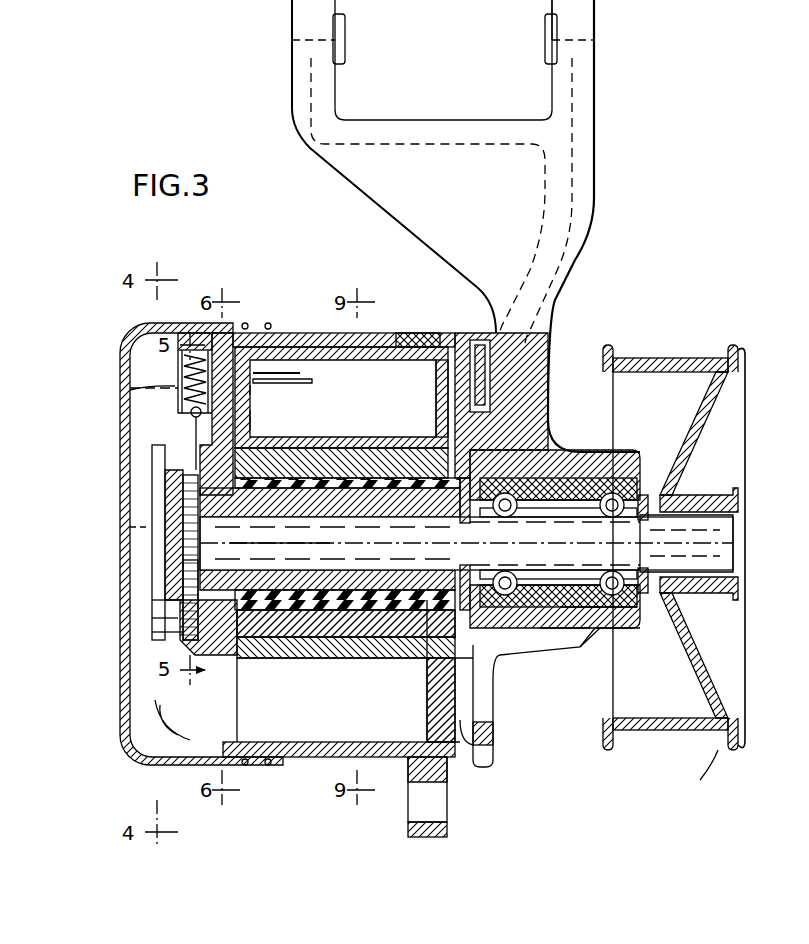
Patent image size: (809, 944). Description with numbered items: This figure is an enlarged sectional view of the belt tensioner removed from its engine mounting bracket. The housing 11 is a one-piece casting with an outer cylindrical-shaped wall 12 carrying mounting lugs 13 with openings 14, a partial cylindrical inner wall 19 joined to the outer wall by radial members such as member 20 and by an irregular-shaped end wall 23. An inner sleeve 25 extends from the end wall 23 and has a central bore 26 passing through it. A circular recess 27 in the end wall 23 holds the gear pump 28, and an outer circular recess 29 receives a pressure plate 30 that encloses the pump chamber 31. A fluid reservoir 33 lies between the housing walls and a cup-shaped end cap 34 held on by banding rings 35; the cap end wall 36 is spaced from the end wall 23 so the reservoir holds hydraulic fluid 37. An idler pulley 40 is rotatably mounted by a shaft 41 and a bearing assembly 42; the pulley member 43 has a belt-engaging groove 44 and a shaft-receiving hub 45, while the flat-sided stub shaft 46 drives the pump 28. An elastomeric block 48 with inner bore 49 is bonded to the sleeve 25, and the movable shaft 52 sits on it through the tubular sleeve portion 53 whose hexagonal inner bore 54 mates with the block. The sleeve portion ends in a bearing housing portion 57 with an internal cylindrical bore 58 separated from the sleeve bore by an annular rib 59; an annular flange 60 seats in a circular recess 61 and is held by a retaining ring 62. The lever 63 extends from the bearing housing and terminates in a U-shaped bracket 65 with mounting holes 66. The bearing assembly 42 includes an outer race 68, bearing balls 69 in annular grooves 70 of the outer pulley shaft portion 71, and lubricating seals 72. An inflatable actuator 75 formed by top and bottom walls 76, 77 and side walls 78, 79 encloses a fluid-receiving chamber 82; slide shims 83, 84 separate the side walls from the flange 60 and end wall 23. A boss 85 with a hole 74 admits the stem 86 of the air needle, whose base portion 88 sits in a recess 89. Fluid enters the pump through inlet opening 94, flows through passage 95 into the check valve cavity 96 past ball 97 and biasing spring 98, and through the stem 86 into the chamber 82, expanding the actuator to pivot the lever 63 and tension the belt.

The housing 11 is at (300, 762).
The outer cylindrical-shaped wall 12 is at (383, 333).
The mounting lugs 13 is at (428, 836).
The openings 14 is at (432, 812).
The inner wall 19 is at (293, 660).
The radially extending member 20 is at (336, 716).
The end wall 23 is at (212, 436).
The inner cylindrical-shaped sleeve 25 is at (380, 640).
The central bore 26 is at (192, 595).
The circular recess 27 is at (162, 606).
The gear pump 28 is at (170, 547).
The outer circular recess 29 is at (175, 632).
The pressure plate 30 is at (152, 506).
The pump chamber 31 is at (183, 490).
The fluid reservoir 33 is at (150, 720).
The end cap 34 is at (118, 684).
The banding rings 35 is at (268, 322).
The cap end wall 36 is at (120, 456).
The hydraulic fluid 37 is at (130, 528).
The idler pulley 40 is at (692, 356).
The shaft 41 is at (372, 530).
The bearing assembly 42 is at (565, 470).
The pulley member 43 is at (703, 524).
The belt-engaging groove 44 is at (704, 775).
The shaft-receiving hub 45 is at (708, 496).
The flat-sided stub shaft 46 is at (205, 540).
The elastomeric block 48 is at (318, 640).
The inner bore 49 is at (250, 655).
The shaft 52 is at (520, 652).
The tubular sleeve portion 53 is at (280, 541).
The inner bore 54 is at (412, 610).
The bearing housing portion 57 is at (620, 610).
The internal cylindrical bore 58 is at (555, 630).
The annular rib 59 is at (505, 546).
The annular flange 60 is at (463, 735).
The circular recess 61 is at (440, 718).
The retaining ring 62 is at (494, 740).
The lever 63 is at (598, 188).
The U-shaped bracket 65 is at (585, 50).
The mounting holes 66 is at (305, 38).
The outer race 68 is at (633, 600).
The bearing balls 69 is at (636, 556).
The annular grooves 70 is at (636, 540).
The outer pulley shaft portion 71 is at (582, 605).
The bearing lubricating seals 72 is at (472, 490).
The hole 74 is at (300, 373).
The inflatable actuator 75 is at (412, 346).
The top wall 76 is at (305, 347).
The bottom wall 77 is at (318, 460).
The side wall 78 is at (440, 385).
The side wall 79 is at (252, 420).
The fluid-receiving chamber 82 is at (405, 490).
The slide shim 83 is at (478, 412).
The slide shim 84 is at (212, 470).
The boss 85 is at (252, 392).
The stem 86 is at (312, 381).
The base portion 88 is at (208, 412).
The recess 89 is at (130, 388).
The inlet opening 94 is at (155, 620).
The passage 95 is at (178, 410).
The cavity 96 is at (183, 376).
The ball 97 is at (190, 410).
The biasing spring 98 is at (180, 352).